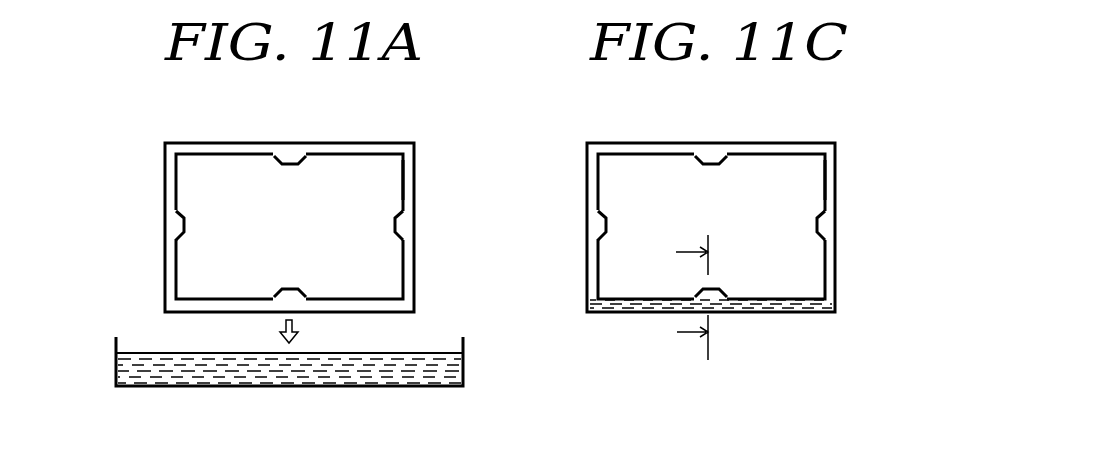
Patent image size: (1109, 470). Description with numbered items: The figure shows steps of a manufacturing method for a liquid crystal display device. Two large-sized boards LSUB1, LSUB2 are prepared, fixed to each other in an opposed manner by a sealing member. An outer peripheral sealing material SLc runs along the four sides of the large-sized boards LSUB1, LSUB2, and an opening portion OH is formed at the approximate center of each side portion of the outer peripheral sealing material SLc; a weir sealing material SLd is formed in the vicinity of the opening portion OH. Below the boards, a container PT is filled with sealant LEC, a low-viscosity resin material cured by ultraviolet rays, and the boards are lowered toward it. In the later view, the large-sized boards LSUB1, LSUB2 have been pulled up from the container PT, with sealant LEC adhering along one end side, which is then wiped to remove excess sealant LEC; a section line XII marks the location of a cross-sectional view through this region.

In FIG. 11A, the large-sized board LSUB1 is at (163, 192).
In FIG. 11C, the large-sized board LSUB1 is at (586, 258).
In FIG. 11A, the large-sized board LSUB2 is at (218, 226).
In FIG. 11C, the large-sized board LSUB2 is at (640, 240).
In FIG. 11A, the weir sealing material SLd is at (292, 163).
In FIG. 11C, the weir sealing material SLd is at (713, 163).
In FIG. 11A, the outer peripheral sealing material SLc is at (405, 170).
In FIG. 11C, the outer peripheral sealing material SLc is at (826, 170).
In FIG. 11A, the opening portion OH is at (405, 227).
In FIG. 11C, the opening portion OH is at (826, 227).
In FIG. 11A, the sealant LEC is at (188, 377).
In FIG. 11C, the sealant LEC is at (658, 307).
In FIG. 11A, the container PT is at (372, 386).
In FIG. 11C, the section line XII- XII is at (686, 299).